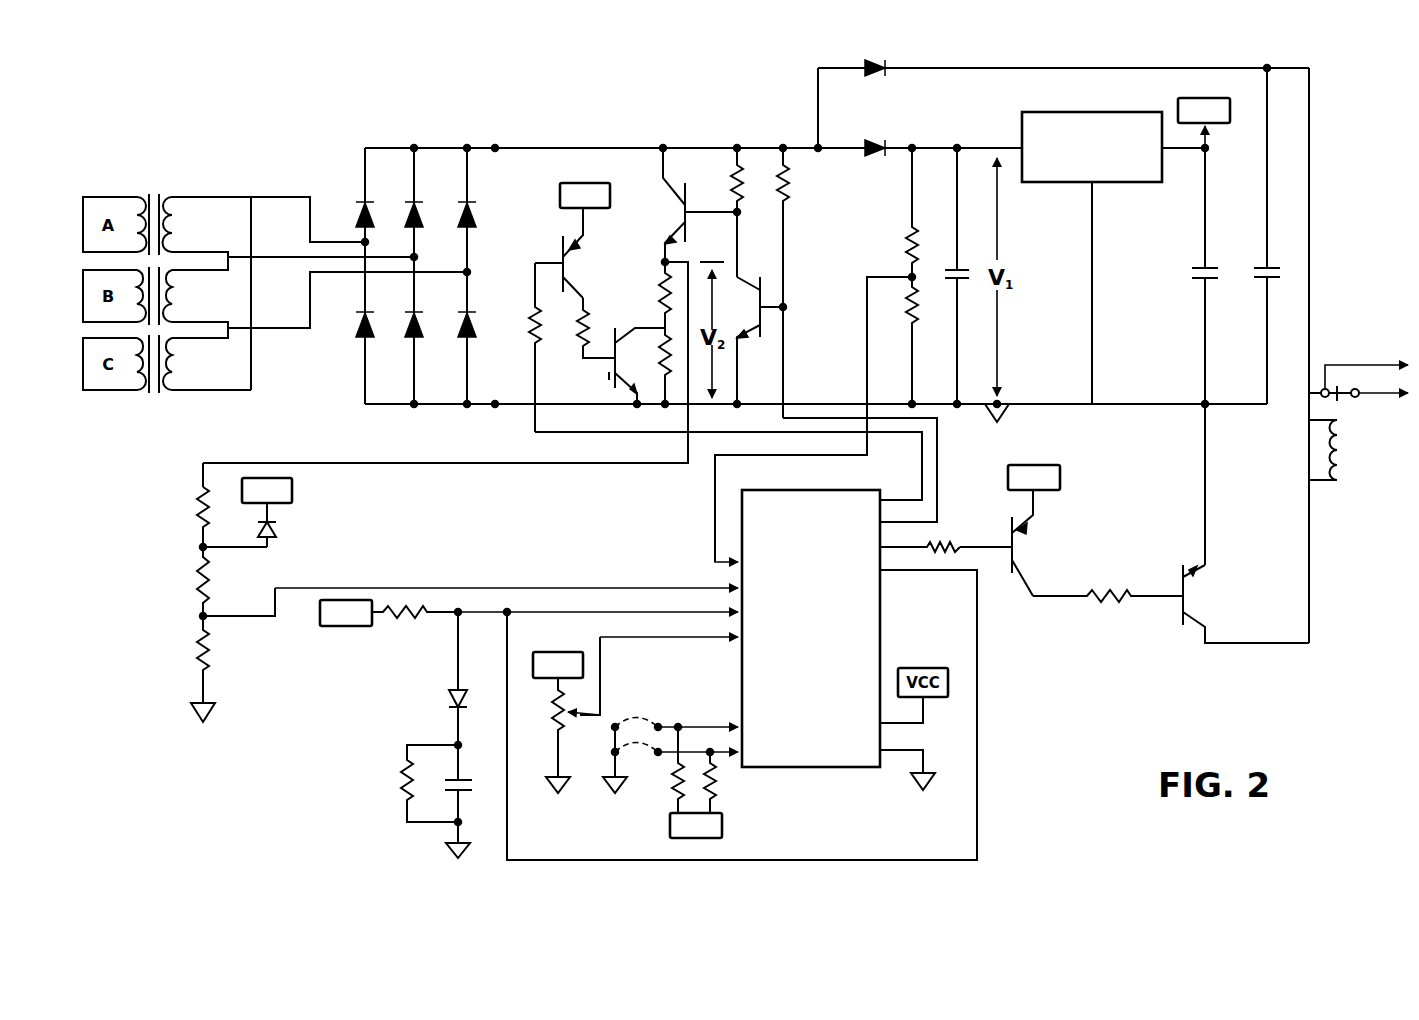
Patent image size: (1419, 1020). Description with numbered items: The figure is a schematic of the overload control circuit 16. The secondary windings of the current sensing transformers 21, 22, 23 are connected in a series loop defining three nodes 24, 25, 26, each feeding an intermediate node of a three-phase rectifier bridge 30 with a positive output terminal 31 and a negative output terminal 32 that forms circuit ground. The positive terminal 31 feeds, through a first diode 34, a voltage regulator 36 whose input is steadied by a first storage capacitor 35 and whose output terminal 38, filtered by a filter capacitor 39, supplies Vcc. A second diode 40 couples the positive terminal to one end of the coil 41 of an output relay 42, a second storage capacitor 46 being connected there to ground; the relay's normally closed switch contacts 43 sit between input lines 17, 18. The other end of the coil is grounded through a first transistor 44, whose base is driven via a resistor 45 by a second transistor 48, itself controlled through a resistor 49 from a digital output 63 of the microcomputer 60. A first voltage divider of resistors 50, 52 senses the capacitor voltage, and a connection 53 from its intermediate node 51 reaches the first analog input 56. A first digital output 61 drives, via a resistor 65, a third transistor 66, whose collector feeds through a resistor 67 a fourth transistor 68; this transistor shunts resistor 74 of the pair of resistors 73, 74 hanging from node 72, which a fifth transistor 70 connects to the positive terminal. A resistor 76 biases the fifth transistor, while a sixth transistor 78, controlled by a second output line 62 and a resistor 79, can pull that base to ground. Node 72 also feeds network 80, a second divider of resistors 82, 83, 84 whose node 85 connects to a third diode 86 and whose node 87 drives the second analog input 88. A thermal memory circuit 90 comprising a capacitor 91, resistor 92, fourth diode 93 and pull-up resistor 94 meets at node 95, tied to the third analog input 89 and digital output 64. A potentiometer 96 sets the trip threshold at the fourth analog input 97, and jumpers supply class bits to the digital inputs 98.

The overload control circuit 16 is at (1028, 690).
The input line 17 is at (1370, 396).
The input line 18 is at (1378, 358).
The current sensing transformer 21 is at (176, 228).
The current sensing transformer 22 is at (176, 296).
The current sensing transformer 23 is at (178, 365).
The node 24 is at (236, 257).
The node 25 is at (236, 328).
The node 26 is at (251, 197).
The three-phase rectifier bridge 30 is at (385, 196).
The positive output terminal 31 is at (495, 148).
The negative output terminal 32 is at (495, 404).
The first diode 34 is at (875, 142).
The first storage capacitor 35 is at (952, 282).
The voltage regulator 36 is at (1050, 182).
The output terminal 38 is at (1208, 152).
The filter capacitor 39 is at (1198, 282).
The second diode 40 is at (875, 62).
The coil 41 is at (1344, 462).
The output relay 42 is at (1331, 355).
The normally closed switch contacts 43 is at (1310, 400).
The first transistor 44 is at (1203, 596).
The resistor 45 is at (1120, 590).
The second storage capacitor 46 is at (1262, 282).
The second transistor 48 is at (1098, 530).
The resistor 49 is at (950, 540).
The resistor 50 is at (910, 230).
The intermediate node 51 is at (881, 276).
The resistor 52 is at (904, 316).
The connection 53 is at (869, 276).
The first analog input 56 is at (713, 530).
The microcomputer 60 is at (811, 628).
The first digital output 61 is at (922, 470).
The second output line 62 is at (937, 452).
The digital output 63 is at (915, 540).
The digital output 64 is at (977, 613).
The resistor 65 is at (535, 315).
The third transistor 66 is at (553, 246).
The resistor 67 is at (605, 294).
The fourth transistor 68 is at (612, 365).
The fifth transistor 70 is at (674, 200).
The node 72 is at (664, 263).
The resistor 73 is at (672, 345).
The resistor 74 is at (652, 373).
The resistor 76 is at (729, 173).
The sixth transistor 78 is at (760, 274).
The resistor 79 is at (792, 180).
The network 80 is at (235, 592).
The resistor 82 is at (196, 506).
The resistor 83 is at (199, 600).
The resistor 84 is at (196, 653).
The node 85 is at (200, 550).
The third diode 86 is at (276, 532).
The node 87 is at (199, 618).
The second analog input 88 is at (706, 584).
The third analog input 89 is at (706, 610).
The thermal memory circuit 90 is at (426, 735).
The capacitor 91 is at (472, 770).
The resistor 92 is at (405, 782).
The fourth diode 93 is at (446, 698).
The pull-up resistor 94 is at (418, 628).
The node 95 is at (462, 620).
The potentiometer 96 is at (560, 728).
The fourth analog input 97 is at (706, 636).
The digital inputs 98 is at (730, 764).